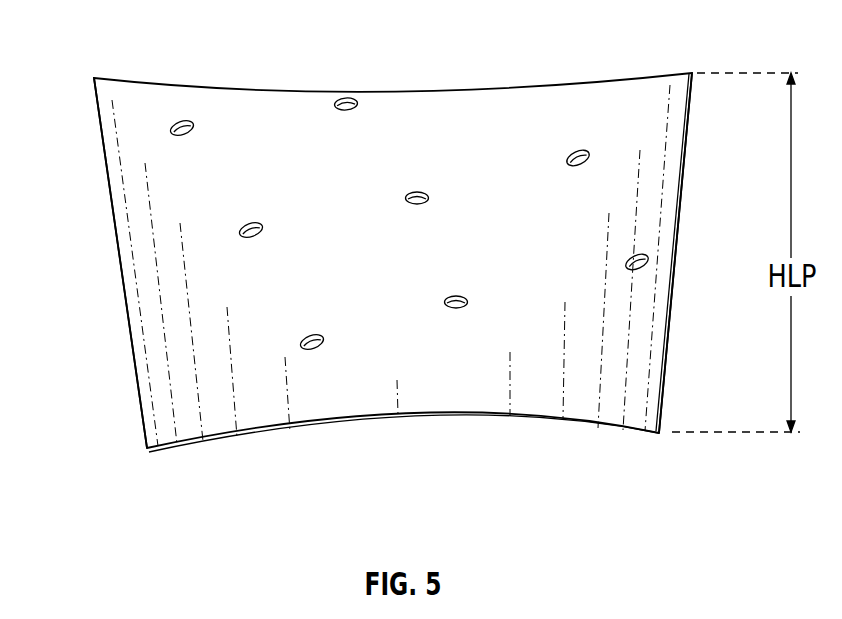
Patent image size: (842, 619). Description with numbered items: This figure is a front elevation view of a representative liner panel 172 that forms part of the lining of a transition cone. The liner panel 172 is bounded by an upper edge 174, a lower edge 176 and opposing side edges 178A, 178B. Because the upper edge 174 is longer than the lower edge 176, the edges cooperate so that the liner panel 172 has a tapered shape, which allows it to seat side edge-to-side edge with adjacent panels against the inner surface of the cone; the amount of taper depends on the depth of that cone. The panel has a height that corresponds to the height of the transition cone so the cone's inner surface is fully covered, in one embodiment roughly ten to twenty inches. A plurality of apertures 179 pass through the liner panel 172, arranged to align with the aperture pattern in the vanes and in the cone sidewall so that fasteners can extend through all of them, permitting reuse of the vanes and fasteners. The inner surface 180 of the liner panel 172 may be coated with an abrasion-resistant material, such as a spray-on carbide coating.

The liner panel 172 is at (508, 107).
The upper edge 174 is at (205, 87).
The lower edge 176 is at (270, 429).
The side edge 178A is at (123, 283).
The side edge 178B is at (677, 250).
The apertures 179 is at (578, 150).
The inner surface 180 is at (398, 125).